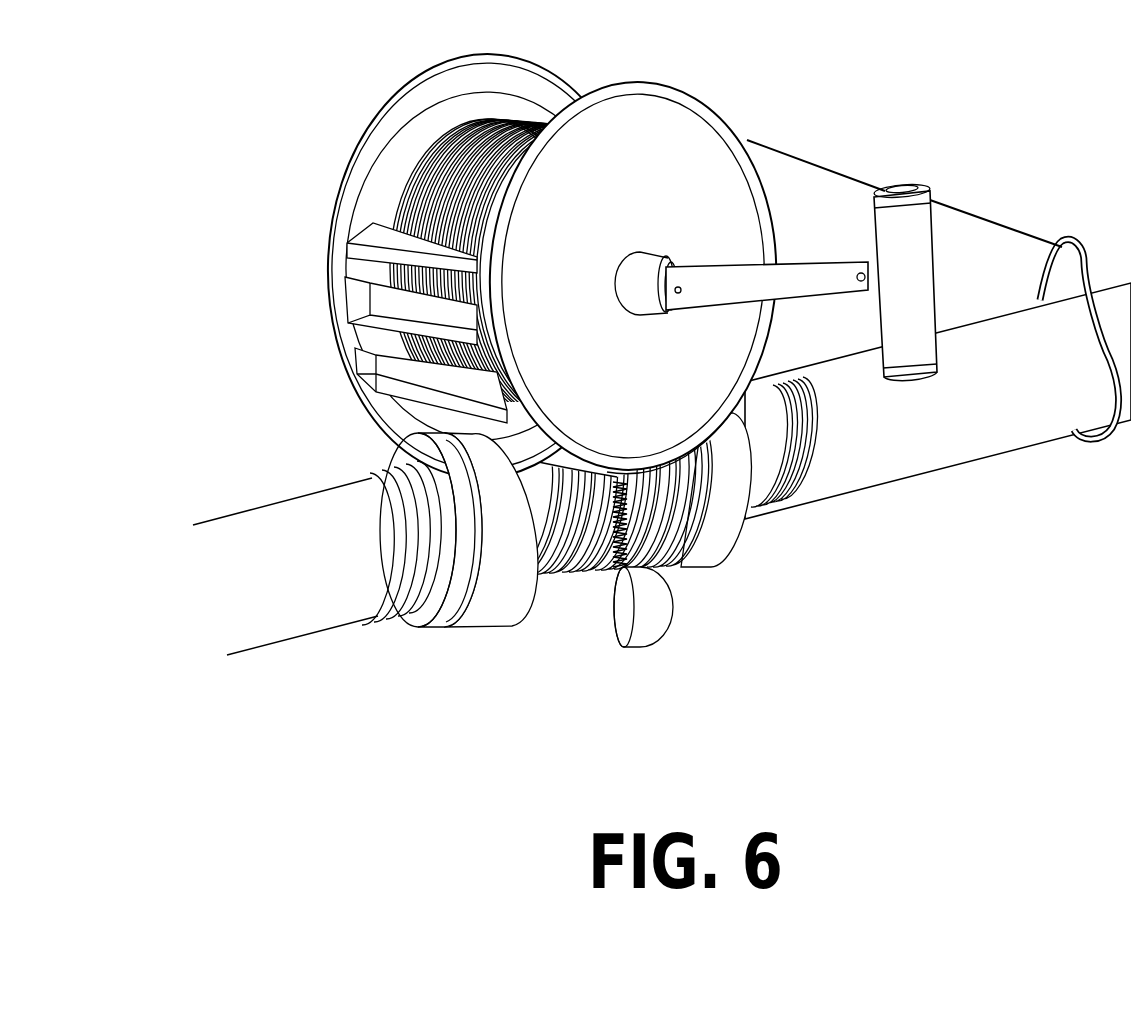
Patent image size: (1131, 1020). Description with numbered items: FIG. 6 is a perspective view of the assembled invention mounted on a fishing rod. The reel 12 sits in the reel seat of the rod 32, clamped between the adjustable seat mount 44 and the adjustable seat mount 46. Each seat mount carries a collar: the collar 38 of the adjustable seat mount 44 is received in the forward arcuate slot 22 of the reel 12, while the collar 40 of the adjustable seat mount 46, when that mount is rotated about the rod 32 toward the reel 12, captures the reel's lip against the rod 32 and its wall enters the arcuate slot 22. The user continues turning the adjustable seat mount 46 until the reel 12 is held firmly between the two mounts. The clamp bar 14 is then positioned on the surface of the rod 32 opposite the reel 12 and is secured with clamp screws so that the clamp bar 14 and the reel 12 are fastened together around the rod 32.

The reel 12 is at (363, 152).
The arcuate slot 22 is at (460, 422).
The rod 32 is at (905, 442).
The collar 38 is at (732, 510).
The adjustable seat mount 44 is at (773, 482).
The clamp bar 14 is at (647, 610).
The collar 40 is at (515, 592).
The adjustable seat mount 46 is at (457, 585).